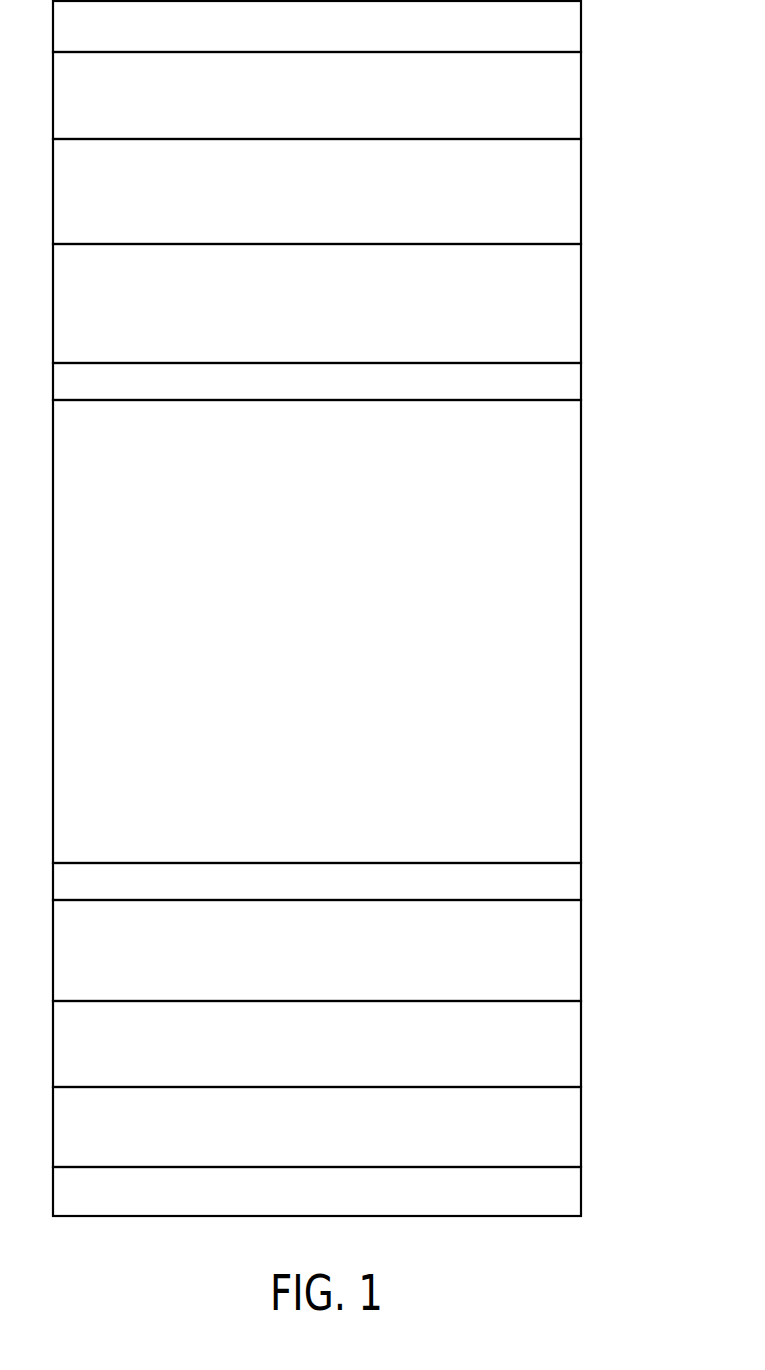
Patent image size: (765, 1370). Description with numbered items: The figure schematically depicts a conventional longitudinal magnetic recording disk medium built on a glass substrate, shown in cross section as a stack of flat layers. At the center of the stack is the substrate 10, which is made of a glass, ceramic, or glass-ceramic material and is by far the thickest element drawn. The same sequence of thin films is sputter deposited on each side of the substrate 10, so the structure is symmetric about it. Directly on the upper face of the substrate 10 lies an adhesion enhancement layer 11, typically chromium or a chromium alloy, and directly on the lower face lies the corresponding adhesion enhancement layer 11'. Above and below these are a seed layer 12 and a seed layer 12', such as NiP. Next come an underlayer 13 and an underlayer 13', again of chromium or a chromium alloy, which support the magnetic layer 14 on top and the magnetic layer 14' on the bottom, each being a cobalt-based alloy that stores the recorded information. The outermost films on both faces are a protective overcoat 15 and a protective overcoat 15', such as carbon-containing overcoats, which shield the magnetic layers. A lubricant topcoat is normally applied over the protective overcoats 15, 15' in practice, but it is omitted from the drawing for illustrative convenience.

The substrate 10 is at (581, 602).
The adhesion enhancement layer 11 is at (353, 381).
The seed layer 12 is at (353, 303).
The underlayer 13 is at (353, 191).
The magnetic layer 14 is at (353, 95).
The protective overcoat 15 is at (353, 26).
The adhesion enhancement layer 11' is at (357, 881).
The seed layer 12' is at (357, 950).
The underlayer 13' is at (357, 1044).
The magnetic layer 14' is at (357, 1127).
The protective overcoat 15' is at (357, 1191).